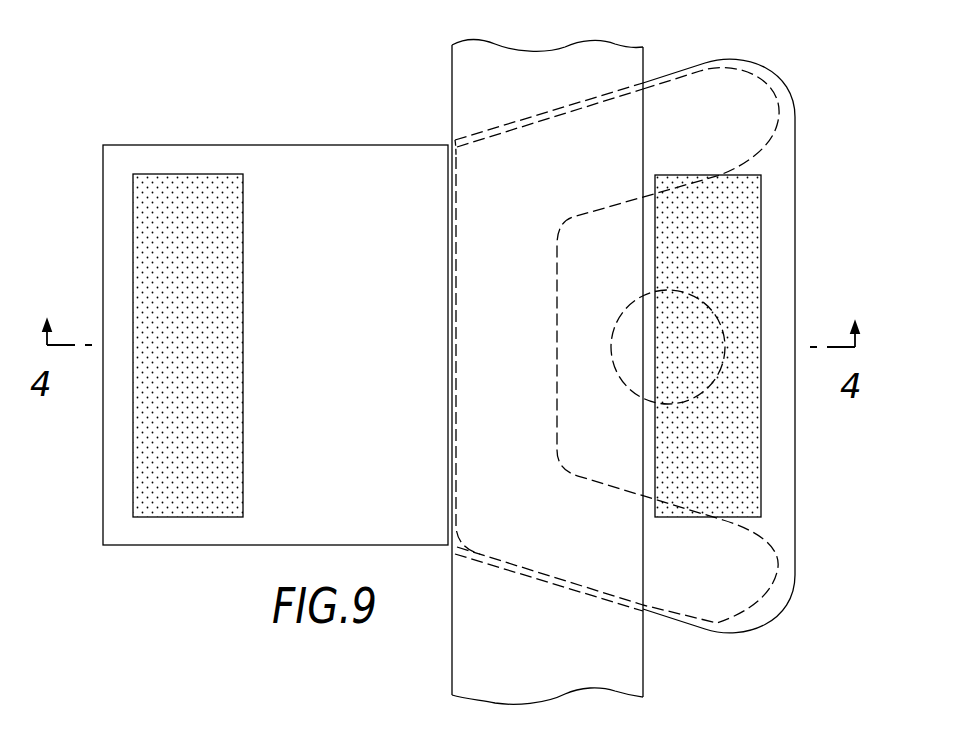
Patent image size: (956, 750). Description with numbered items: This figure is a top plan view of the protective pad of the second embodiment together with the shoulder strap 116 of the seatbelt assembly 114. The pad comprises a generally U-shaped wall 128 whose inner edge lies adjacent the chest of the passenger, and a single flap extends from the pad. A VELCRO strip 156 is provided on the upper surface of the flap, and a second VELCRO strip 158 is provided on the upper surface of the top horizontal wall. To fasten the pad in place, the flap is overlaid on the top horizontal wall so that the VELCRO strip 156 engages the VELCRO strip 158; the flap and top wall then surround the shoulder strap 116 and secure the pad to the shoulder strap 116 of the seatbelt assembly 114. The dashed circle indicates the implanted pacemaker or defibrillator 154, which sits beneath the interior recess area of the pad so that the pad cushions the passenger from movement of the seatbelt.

The seatbelt assembly 114 is at (305, 145).
The shoulder strap 116 is at (585, 44).
The U-shaped wall 128 is at (476, 163).
The implanted pacemaker or defibrillator 154 is at (623, 330).
The VELCRO strip 156 is at (234, 305).
The VELCRO strip 158 is at (722, 190).